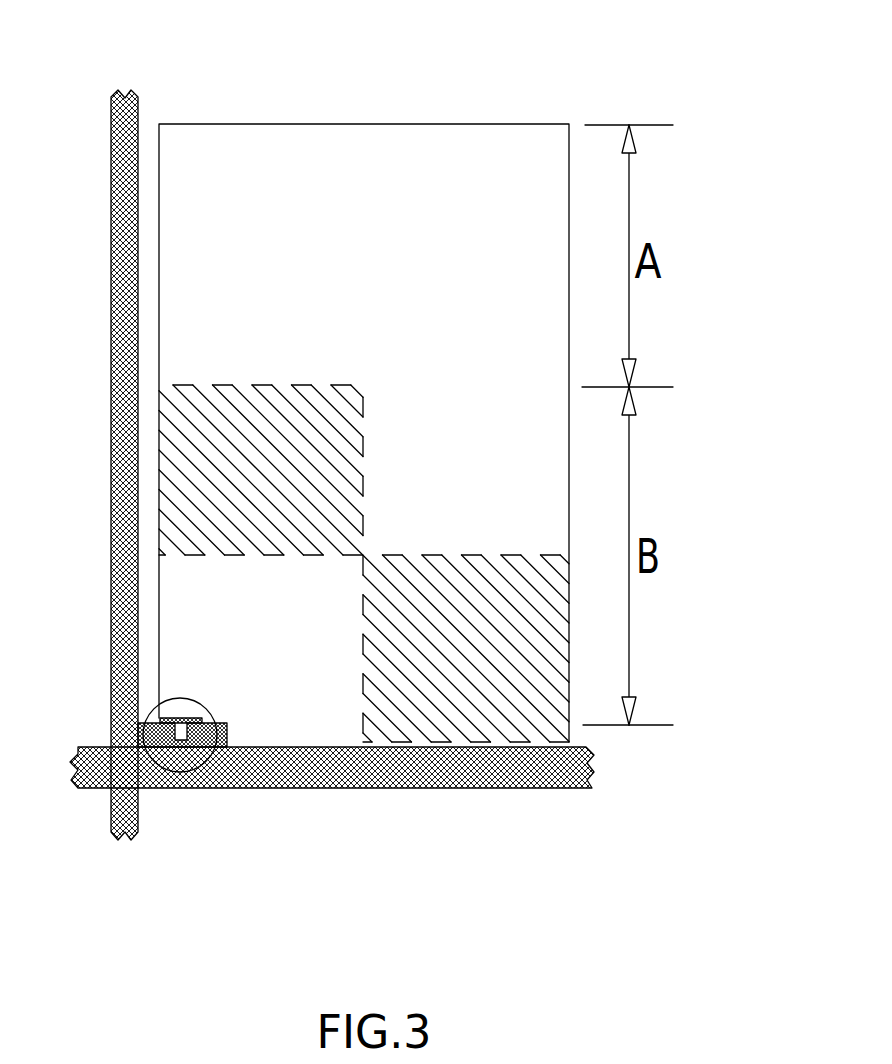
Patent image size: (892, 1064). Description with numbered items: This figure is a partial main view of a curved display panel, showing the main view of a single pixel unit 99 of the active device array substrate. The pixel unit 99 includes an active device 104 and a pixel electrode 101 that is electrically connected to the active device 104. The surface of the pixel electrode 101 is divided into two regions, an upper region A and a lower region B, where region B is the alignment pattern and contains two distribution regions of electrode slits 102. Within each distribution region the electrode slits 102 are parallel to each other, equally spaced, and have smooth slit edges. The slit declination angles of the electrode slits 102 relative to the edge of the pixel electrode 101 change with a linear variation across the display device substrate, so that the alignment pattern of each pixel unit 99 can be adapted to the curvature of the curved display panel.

The pixel unit 99 is at (527, 62).
The pixel electrode 101 is at (355, 187).
The electrode slits 102 is at (493, 733).
The active device 104 is at (167, 768).